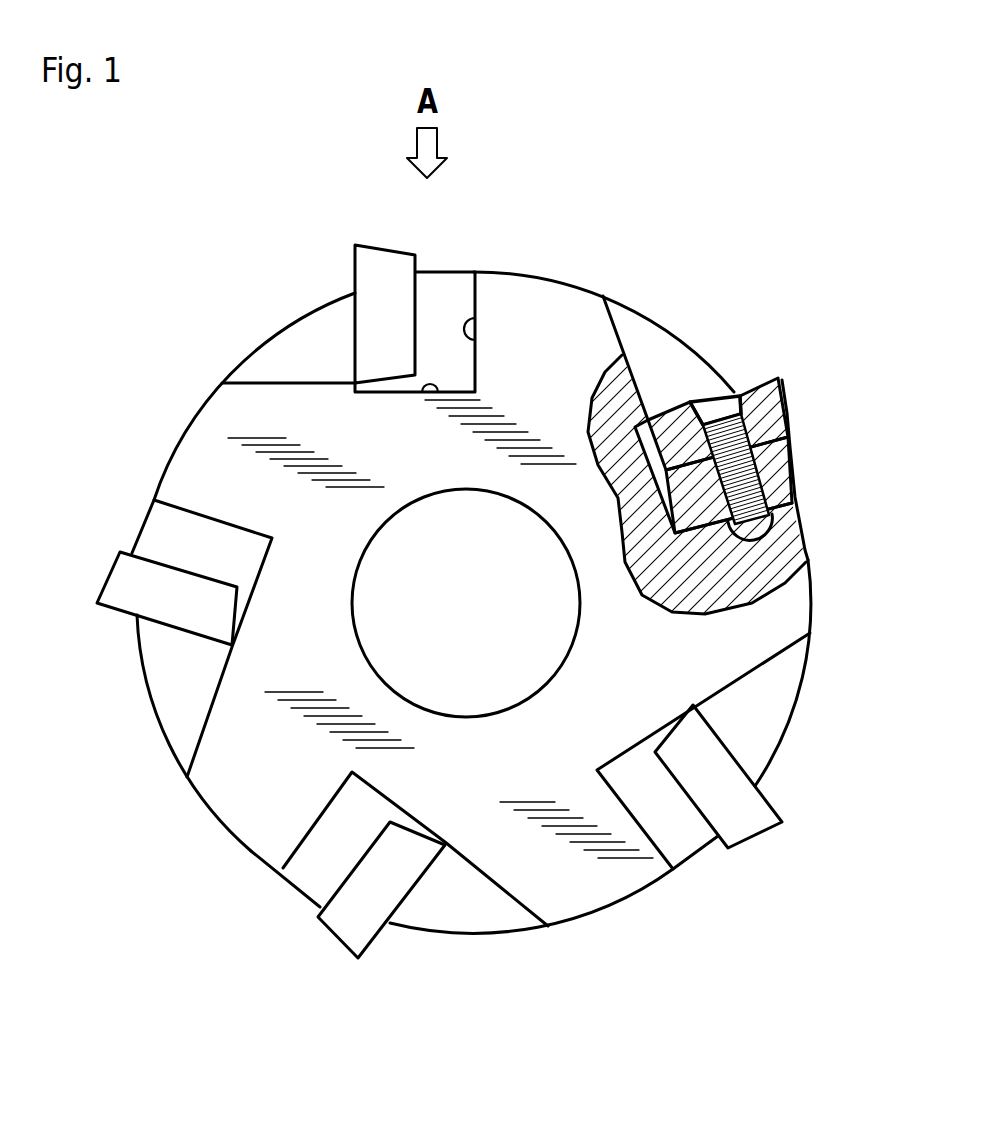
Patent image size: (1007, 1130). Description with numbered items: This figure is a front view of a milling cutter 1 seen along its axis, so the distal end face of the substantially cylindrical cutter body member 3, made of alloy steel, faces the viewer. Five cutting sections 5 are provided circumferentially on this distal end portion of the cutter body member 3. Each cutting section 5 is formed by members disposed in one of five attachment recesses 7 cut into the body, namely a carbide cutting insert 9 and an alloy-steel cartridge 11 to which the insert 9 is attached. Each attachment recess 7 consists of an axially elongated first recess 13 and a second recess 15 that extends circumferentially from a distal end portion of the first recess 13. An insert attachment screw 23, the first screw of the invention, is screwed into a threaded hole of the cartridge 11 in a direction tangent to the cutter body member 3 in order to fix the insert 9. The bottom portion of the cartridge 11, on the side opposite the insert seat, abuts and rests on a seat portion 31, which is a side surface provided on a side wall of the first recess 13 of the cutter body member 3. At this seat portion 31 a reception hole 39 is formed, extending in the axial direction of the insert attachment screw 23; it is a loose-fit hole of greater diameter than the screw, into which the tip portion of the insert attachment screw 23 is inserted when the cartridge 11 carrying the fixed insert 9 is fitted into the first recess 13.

The milling cutter 1 is at (760, 250).
The cutter body member 3 is at (787, 617).
The cutting section 5 is at (343, 230).
The attachment recess 7 is at (390, 394).
The cutting insert 9 is at (363, 280).
The cartridge 11 is at (445, 285).
The first recess 13 is at (430, 392).
The second recess 15 is at (618, 343).
The insert attachment screw 23 is at (718, 400).
The seat portion 31 is at (475, 330).
The reception hole 39 is at (760, 532).